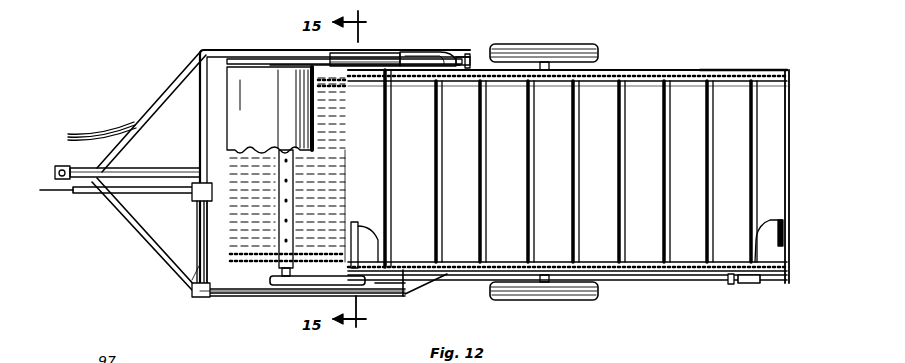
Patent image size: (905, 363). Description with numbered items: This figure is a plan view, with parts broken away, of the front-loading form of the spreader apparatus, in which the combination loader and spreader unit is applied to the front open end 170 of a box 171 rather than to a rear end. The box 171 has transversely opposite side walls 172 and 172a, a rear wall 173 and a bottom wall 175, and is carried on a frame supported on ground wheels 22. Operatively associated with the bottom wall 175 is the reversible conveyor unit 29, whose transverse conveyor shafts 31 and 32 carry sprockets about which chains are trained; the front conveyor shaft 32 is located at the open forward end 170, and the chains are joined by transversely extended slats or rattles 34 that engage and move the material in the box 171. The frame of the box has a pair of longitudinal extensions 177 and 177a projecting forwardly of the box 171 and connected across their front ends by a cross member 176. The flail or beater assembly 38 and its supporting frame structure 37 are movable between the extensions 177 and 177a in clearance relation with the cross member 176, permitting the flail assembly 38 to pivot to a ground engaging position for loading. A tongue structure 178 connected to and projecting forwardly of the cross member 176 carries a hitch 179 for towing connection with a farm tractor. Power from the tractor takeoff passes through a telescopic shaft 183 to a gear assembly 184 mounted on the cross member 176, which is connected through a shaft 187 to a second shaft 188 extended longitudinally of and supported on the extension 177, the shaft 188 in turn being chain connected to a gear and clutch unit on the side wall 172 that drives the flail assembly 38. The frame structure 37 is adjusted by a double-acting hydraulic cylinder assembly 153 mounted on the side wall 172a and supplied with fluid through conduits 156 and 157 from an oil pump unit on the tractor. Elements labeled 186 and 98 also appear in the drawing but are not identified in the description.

The ground wheels 22 is at (553, 46).
The conveyor unit 29 is at (651, 257).
The conveyor shaft 31 is at (786, 267).
The conveyor shaft 32 is at (362, 248).
The slats or rattles 34 is at (571, 222).
The frame structure 37 is at (306, 40).
The flail or beater assembly 38 is at (258, 85).
The double-acting hydraulic cylinder assembly 153 is at (439, 60).
The conduit 156 is at (82, 134).
The conduit 157 is at (104, 133).
The front open end 170 is at (347, 212).
The box 171 is at (652, 65).
The side wall 172 is at (699, 278).
The side wall 172a is at (703, 73).
The rear wall 173 is at (788, 92).
The bottom wall 175 is at (601, 97).
The cross member 176 is at (201, 112).
The longitudinal extension 177 is at (251, 298).
The longitudinal extension 177a is at (366, 52).
The tongue structure 178 is at (134, 230).
The hitch 179 is at (57, 166).
The telescopic shaft 183 is at (155, 194).
The gear assembly 184 is at (209, 184).
The lower bracket block 186 is at (201, 298).
The shaft 187 is at (197, 265).
The second shaft 188 is at (372, 298).
The adjacent figure element 98 is at (198, 362).